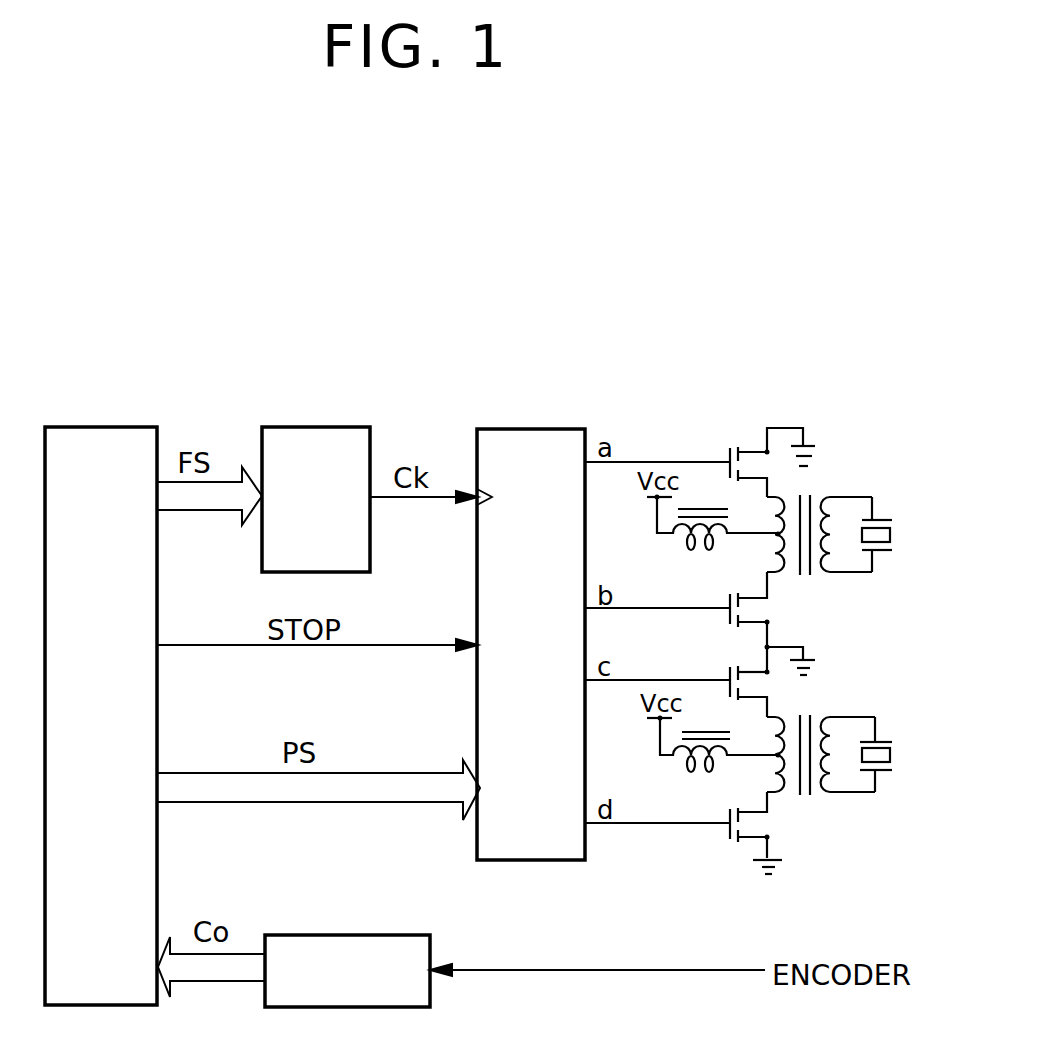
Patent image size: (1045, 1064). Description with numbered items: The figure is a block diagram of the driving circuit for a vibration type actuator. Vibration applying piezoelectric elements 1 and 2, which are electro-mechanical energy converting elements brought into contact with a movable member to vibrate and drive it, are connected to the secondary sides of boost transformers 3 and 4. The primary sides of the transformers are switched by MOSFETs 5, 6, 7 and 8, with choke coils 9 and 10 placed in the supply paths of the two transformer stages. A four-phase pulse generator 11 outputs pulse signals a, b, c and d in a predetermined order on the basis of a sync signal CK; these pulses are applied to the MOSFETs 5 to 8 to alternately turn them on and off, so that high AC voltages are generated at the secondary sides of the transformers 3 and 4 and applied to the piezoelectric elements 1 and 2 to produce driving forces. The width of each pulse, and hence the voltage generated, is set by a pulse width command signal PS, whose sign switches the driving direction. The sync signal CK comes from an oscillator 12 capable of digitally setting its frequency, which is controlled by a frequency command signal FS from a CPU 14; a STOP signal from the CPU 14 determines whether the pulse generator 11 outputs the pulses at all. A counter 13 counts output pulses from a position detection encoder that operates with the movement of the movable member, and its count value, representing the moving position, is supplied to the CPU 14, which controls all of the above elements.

The piezoelectric element 1 is at (878, 520).
The piezoelectric element 2 is at (878, 742).
The boost transformer 3 is at (803, 497).
The boost transformer 4 is at (805, 717).
The MOSFET 5 is at (728, 456).
The MOSFET 6 is at (728, 600).
The MOSFET 7 is at (728, 675).
The MOSFET 8 is at (728, 815).
The choke coil 9 is at (702, 507).
The choke coil 10 is at (703, 730).
The 4-phase pulse generator 11 is at (537, 429).
The oscillator 12 is at (328, 427).
The counter 13 is at (317, 935).
The CPU 14 is at (97, 427).